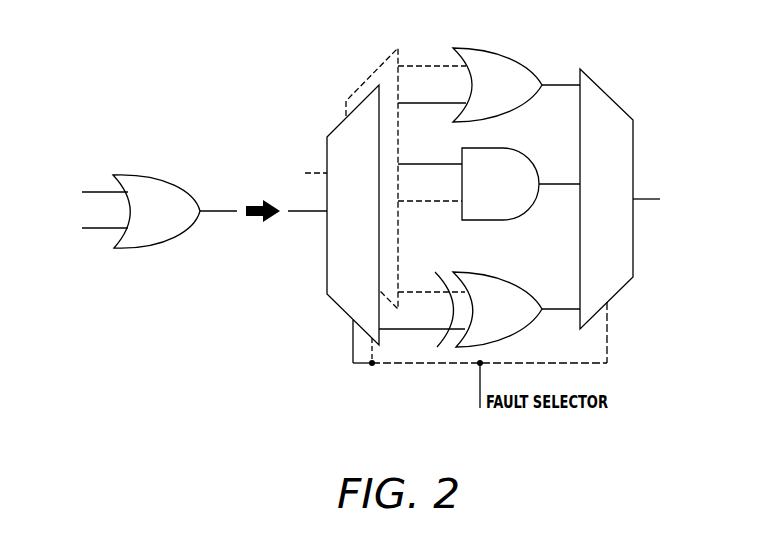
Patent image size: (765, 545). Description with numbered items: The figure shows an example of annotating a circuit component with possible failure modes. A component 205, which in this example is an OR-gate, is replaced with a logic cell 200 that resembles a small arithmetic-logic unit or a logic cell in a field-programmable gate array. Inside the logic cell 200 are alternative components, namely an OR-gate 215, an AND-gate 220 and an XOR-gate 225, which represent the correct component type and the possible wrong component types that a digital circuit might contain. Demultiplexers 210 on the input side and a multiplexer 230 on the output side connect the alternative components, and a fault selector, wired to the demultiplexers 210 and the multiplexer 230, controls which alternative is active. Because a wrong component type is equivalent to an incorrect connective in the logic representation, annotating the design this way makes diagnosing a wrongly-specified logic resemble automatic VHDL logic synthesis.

The logic cell 200 is at (414, 42).
The component 205 is at (142, 175).
The demultiplexers 210 is at (327, 137).
The OR-gate 215 is at (500, 50).
The AND-gate 220 is at (503, 148).
The XOR-gate 225 is at (503, 276).
The multiplexer 230 is at (606, 94).